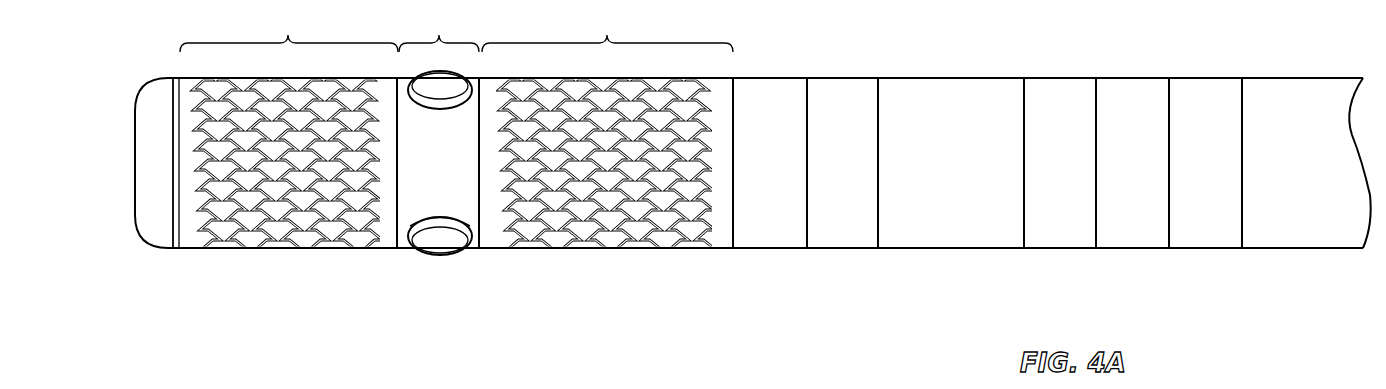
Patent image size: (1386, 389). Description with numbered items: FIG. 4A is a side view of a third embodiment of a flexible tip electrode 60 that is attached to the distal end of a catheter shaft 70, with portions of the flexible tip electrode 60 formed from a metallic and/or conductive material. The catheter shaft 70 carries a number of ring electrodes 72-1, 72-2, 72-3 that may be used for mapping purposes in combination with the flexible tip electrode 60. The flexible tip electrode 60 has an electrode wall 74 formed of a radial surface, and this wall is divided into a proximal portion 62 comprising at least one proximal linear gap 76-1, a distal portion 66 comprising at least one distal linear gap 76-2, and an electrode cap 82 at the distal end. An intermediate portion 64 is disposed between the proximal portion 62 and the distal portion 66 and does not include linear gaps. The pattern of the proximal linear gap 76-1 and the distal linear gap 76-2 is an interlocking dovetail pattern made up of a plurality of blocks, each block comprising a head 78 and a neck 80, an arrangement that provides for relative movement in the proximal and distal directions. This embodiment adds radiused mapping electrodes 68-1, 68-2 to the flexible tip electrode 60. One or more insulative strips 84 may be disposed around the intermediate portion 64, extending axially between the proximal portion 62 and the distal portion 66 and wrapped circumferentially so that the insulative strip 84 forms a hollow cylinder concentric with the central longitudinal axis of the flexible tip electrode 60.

The flexible tip electrode 60 is at (158, 65).
The proximal portion 62 is at (636, 136).
The intermediate portion 64 is at (438, 127).
The distal portion 66 is at (283, 166).
The radiused mapping electrode 68-1 is at (440, 243).
The radiused mapping electrode 68-2 is at (430, 88).
The catheter shaft 70 is at (1303, 218).
The ring electrode 72-1 is at (843, 227).
The ring electrode 72-2 is at (1062, 227).
The ring electrode 72-3 is at (1207, 227).
The electrode wall 74 is at (718, 147).
The proximal linear gap 76-1 is at (700, 108).
The distal linear gap 76-2 is at (197, 181).
The head 78 is at (693, 148).
The neck 80 is at (687, 148).
The electrode cap 82 is at (155, 227).
The insulative strip 84 is at (462, 190).